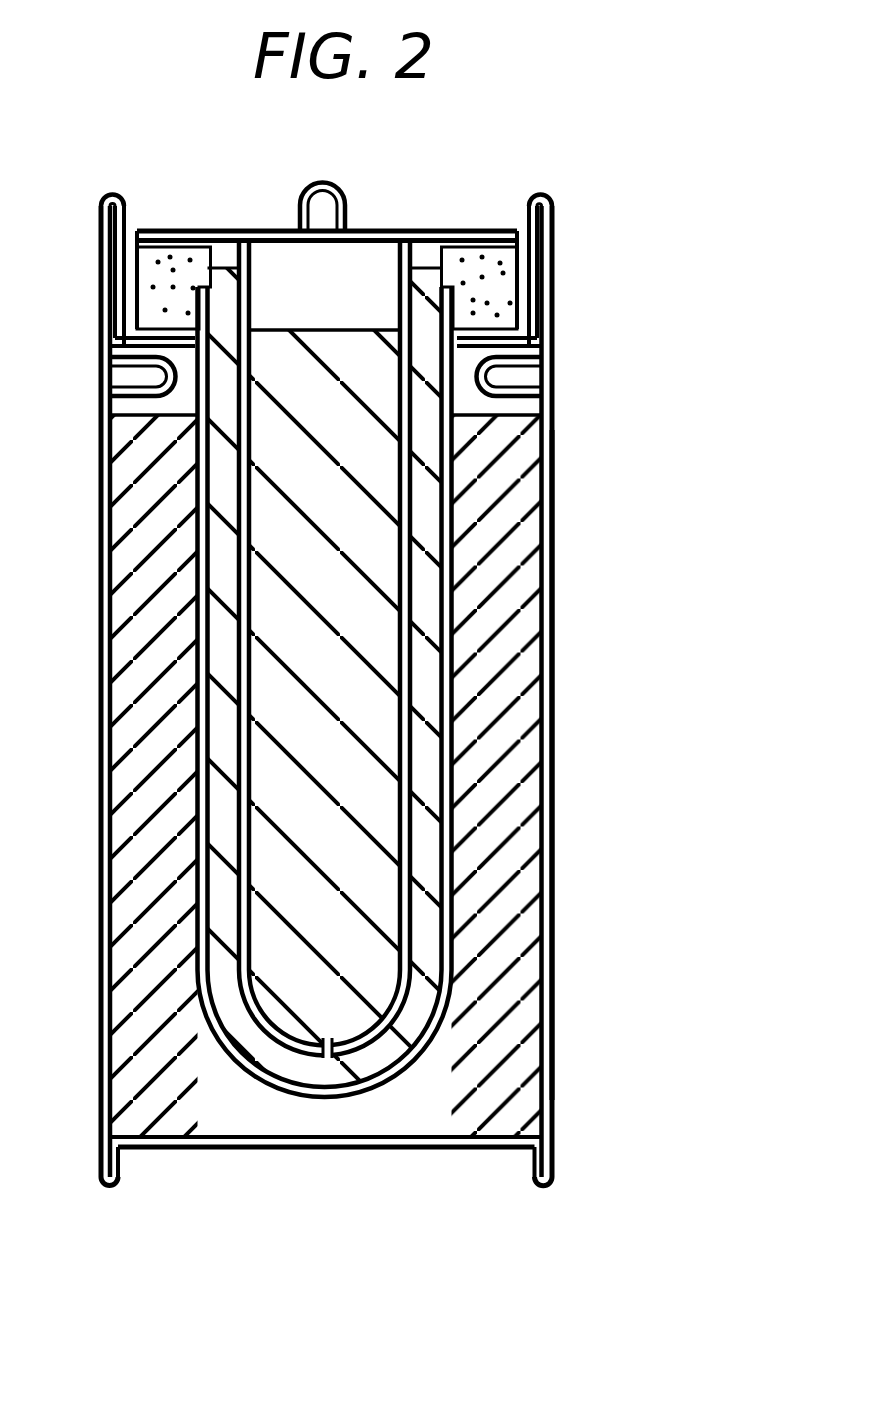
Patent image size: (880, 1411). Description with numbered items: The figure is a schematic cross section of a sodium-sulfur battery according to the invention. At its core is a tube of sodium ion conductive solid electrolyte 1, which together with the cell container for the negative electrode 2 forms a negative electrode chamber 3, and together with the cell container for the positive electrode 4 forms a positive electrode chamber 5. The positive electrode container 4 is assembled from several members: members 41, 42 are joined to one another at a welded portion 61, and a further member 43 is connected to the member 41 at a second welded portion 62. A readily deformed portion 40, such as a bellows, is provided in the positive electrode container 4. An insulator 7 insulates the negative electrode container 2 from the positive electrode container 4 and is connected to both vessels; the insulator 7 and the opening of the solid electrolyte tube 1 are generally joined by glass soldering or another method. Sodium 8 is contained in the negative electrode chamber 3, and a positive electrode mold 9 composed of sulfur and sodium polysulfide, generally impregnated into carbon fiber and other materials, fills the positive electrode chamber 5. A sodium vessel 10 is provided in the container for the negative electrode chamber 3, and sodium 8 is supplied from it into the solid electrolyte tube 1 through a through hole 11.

The tube of sodium ion conductive solid electrolyte 1 is at (445, 593).
The cell container for the negative electrode 2 is at (370, 229).
The negative electrode chamber 3 is at (292, 255).
The cell container for the positive electrode 4 is at (556, 472).
The positive electrode chamber 5 is at (186, 401).
The insulator 7 is at (503, 298).
The sodium 8 is at (228, 667).
The positive electrode mold 9 is at (523, 634).
The sodium vessel 10 is at (243, 767).
The through hole 11 is at (333, 1048).
The readily deformed portion 40 is at (555, 400).
The member of the cell container for the positive electrode 41 is at (556, 760).
The member of the cell container for the positive electrode 42 is at (553, 357).
The member forming the cell container for the positive electrode 43 is at (405, 1152).
The welded portion 61 is at (547, 193).
The welded portion 62 is at (548, 1190).